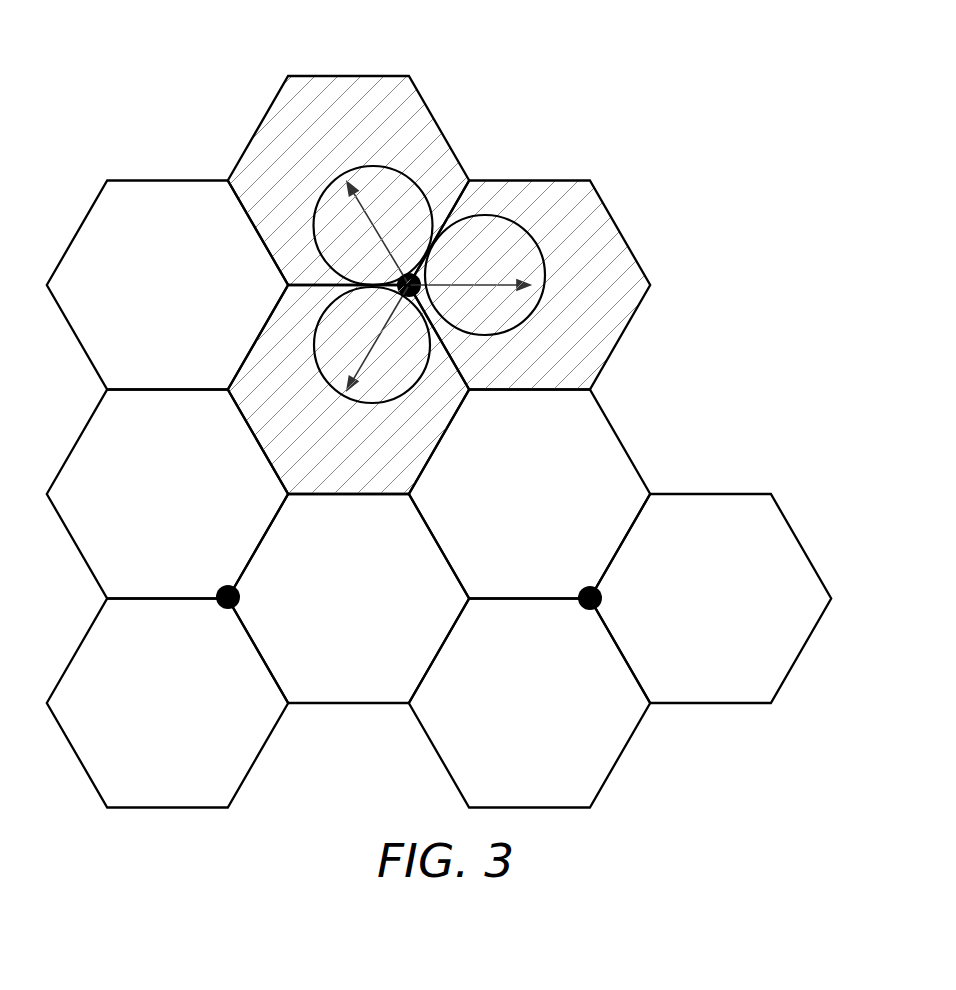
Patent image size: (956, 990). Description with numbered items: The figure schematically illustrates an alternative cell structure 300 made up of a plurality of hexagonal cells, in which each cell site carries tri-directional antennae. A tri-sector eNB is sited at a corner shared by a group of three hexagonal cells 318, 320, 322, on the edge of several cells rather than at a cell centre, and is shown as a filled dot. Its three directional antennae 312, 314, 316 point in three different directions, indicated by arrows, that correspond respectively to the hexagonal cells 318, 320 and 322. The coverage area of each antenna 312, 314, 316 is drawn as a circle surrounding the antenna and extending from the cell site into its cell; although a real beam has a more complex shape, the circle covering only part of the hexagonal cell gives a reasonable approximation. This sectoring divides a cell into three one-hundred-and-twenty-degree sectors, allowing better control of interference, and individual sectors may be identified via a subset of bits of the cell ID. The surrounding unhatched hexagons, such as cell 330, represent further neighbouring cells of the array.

The cell structure 300 is at (185, 82).
The directional antenna 312 is at (487, 285).
The directional antenna 314 is at (367, 367).
The directional antenna 316 is at (378, 213).
The hexagonal cell 318 is at (630, 242).
The hexagonal cell 320 is at (252, 347).
The hexagonal cell 322 is at (428, 103).
The unhatched neighboring cell 330 is at (617, 432).